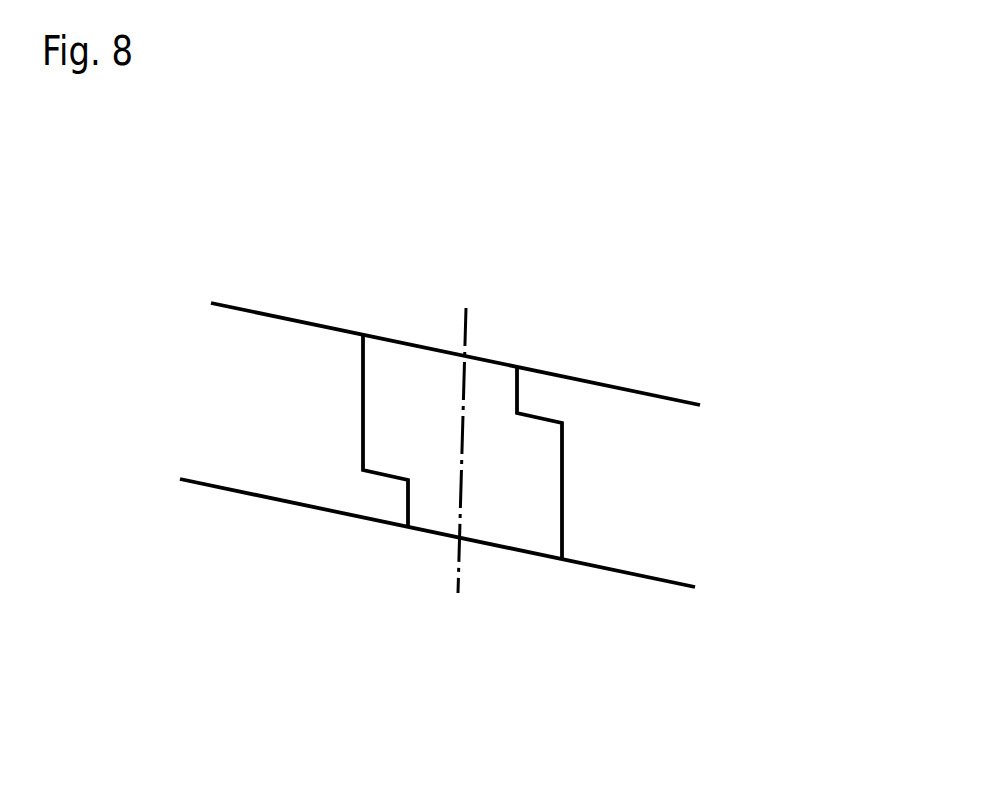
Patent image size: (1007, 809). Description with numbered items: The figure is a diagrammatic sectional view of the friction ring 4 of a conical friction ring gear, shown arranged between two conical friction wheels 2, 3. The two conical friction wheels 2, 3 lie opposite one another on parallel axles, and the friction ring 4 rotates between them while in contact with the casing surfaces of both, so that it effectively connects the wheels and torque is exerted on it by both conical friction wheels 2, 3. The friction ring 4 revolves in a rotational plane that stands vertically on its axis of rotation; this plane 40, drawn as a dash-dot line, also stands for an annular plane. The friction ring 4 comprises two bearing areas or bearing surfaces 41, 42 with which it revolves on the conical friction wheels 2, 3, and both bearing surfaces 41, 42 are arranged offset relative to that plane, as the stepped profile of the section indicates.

The conical friction wheel 2 is at (302, 280).
The conical friction wheel 3 is at (283, 574).
The friction ring 4 is at (515, 482).
The plane 40 is at (467, 320).
The bearing surface 41 is at (502, 362).
The bearing surface 42 is at (499, 547).